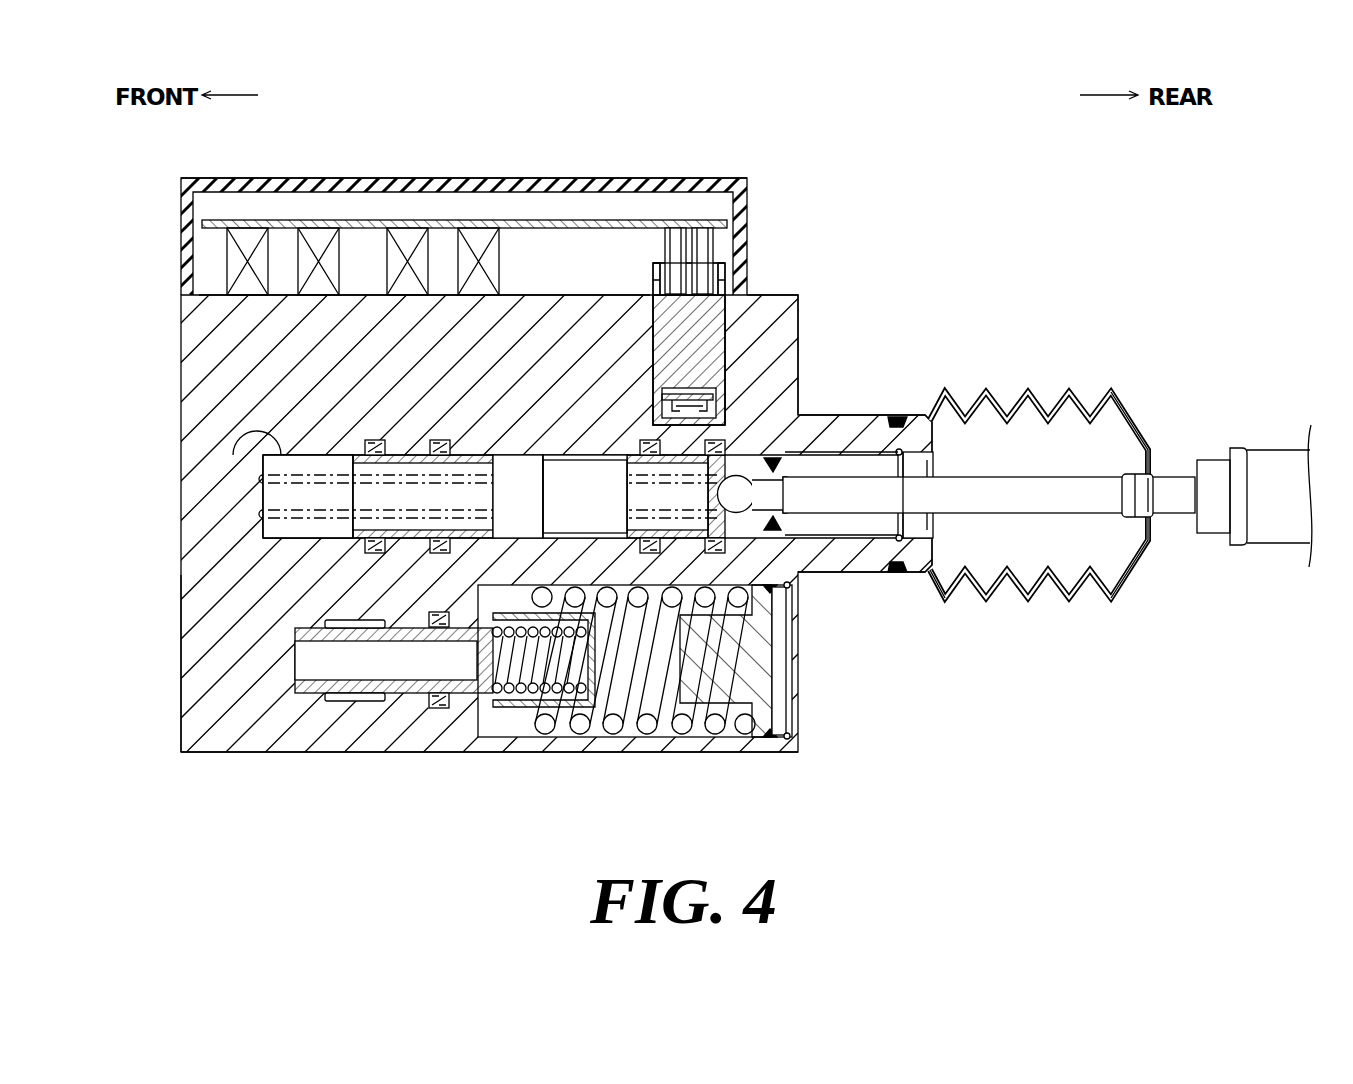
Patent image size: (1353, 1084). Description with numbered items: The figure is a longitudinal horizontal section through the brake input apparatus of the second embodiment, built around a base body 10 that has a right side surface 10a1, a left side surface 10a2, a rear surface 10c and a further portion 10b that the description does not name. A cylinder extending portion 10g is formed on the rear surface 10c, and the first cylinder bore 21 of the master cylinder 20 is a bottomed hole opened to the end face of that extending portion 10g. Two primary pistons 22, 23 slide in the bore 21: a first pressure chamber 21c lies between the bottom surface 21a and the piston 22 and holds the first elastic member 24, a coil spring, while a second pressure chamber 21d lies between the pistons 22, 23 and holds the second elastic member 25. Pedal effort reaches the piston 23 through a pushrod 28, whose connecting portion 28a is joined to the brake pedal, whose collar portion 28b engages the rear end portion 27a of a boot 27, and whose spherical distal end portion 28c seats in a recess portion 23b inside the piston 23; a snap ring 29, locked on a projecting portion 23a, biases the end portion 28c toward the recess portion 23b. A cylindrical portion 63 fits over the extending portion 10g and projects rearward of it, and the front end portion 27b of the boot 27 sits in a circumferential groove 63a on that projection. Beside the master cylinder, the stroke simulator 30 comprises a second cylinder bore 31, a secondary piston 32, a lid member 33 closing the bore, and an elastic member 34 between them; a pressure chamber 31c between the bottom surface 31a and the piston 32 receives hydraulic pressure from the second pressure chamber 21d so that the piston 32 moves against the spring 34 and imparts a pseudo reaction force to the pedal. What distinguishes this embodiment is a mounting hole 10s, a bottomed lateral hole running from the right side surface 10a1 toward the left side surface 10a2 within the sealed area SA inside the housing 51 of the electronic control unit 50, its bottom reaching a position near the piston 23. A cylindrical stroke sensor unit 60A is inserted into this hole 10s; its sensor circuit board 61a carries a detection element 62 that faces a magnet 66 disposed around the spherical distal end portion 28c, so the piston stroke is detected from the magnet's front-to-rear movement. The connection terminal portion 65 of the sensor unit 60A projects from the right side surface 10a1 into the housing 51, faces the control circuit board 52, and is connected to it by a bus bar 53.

The base body 10 is at (173, 330).
The right side surface 10a1 is at (213, 278).
The left side surface 10a2 is at (205, 755).
The lower portion of housing 10b is at (180, 662).
The rear surface 10c is at (800, 300).
The mounting hole 10s is at (708, 350).
The cylinder extending portion 10g is at (832, 445).
The master cylinder 20 is at (1014, 364).
The first cylinder bore 21 is at (885, 470).
The bottom surface 21a is at (250, 433).
The first pressure chamber 21c is at (285, 490).
The second pressure chamber 21d is at (542, 532).
The primary piston 22 is at (503, 455).
The primary piston 23 is at (742, 512).
The projecting portion 23a is at (750, 488).
The recess portion 23b is at (760, 524).
The first elastic member 24 is at (318, 475).
The second elastic member 25 is at (592, 468).
The boot 27 is at (1130, 425).
The rear end portion 27a is at (1150, 468).
The front end portion 27b is at (920, 575).
The pushrod 28 is at (1090, 505).
The connecting portion 28a is at (1270, 462).
The collar portion 28b is at (1143, 498).
The spherical distal end portion 28c is at (790, 532).
The snap ring 29 is at (838, 468).
The stroke simulator 30 is at (810, 704).
The second cylinder bore 31 is at (521, 708).
The bottom surface 31a is at (488, 700).
The pressure chamber 31c is at (497, 710).
The secondary piston 32 is at (560, 710).
The lid member 33 is at (737, 690).
The elastic member 34 is at (648, 727).
The electronic control unit 50 is at (336, 169).
The housing 51 is at (393, 178).
The control circuit board 52 is at (480, 218).
The bus bar 53 is at (710, 245).
The stroke sensor unit 60A is at (740, 393).
The sensor circuit board 61a is at (697, 395).
The detection element 62 is at (660, 410).
The cylindrical portion 63 is at (905, 420).
The circumferential groove 63a is at (902, 575).
The connection terminal portion 65 is at (720, 282).
The magnet 66 is at (786, 630).
The sealed area SA is at (682, 200).